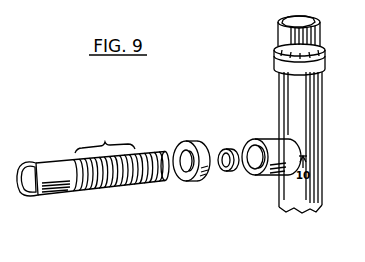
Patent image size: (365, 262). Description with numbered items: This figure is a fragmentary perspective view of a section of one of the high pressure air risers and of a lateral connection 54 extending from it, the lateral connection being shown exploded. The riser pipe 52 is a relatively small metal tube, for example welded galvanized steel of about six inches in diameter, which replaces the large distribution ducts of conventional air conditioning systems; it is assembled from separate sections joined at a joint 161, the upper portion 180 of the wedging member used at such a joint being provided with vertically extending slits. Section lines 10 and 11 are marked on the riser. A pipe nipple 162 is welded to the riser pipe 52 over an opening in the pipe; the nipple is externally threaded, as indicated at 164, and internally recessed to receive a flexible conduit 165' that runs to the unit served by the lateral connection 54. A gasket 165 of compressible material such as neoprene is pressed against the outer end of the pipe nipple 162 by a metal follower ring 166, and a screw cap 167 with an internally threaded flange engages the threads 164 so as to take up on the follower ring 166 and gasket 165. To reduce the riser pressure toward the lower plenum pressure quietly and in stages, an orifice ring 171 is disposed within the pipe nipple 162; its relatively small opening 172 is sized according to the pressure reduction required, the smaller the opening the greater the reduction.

The section line 10 is at (56, 180).
The section line 11 is at (296, 45).
The riser pipe 52 is at (322, 134).
The lateral connection 54 is at (105, 141).
The joint 161 is at (318, 74).
The pipe nipple 162 is at (266, 173).
The threads 164 is at (260, 143).
The gasket 165 is at (184, 130).
The flexible conduit 165' is at (124, 179).
The follower ring 166 is at (187, 177).
The screw cap 167 is at (204, 172).
The orifice ring 171 is at (229, 171).
The opening 172 is at (227, 149).
The upper portion of wedging member 180 is at (321, 56).